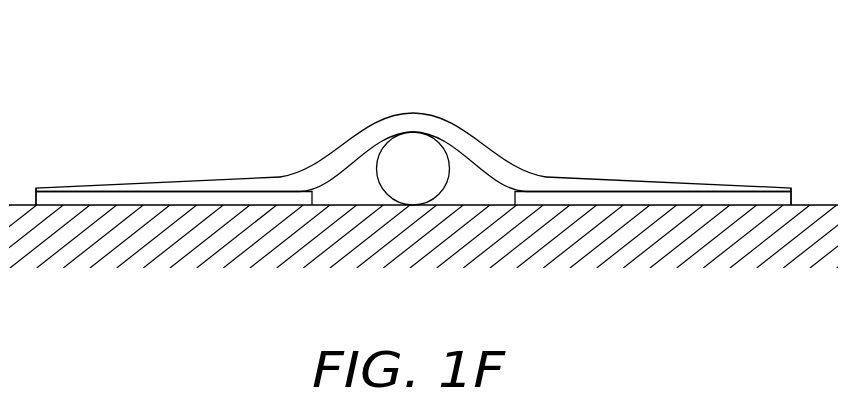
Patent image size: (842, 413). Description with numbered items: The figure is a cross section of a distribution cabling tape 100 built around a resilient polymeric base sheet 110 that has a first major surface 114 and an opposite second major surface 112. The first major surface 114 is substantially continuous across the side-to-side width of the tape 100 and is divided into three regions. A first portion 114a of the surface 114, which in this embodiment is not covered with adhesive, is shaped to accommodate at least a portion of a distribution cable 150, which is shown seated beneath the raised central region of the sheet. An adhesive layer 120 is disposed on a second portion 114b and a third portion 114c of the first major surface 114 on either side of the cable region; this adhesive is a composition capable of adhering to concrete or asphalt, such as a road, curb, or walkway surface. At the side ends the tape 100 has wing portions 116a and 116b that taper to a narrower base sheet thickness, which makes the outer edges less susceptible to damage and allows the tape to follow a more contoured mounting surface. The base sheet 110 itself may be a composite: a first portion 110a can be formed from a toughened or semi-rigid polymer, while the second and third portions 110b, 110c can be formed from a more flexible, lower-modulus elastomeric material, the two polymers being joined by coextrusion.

The distribution cabling tape 100 is at (419, 178).
The resilient polymeric base sheet 110 is at (413, 132).
The first portion of polymeric base sheet 110a is at (480, 143).
The second portion of polymeric base sheet 110b is at (202, 180).
The third portion of polymeric base sheet 110c is at (617, 180).
The second major surface 112 is at (136, 183).
The first major surface 114 is at (413, 190).
The first portion of the first major surface 114a is at (412, 132).
The second portion of the first major surface 114b is at (249, 190).
The third portion of the first major surface 114c is at (665, 191).
The wing portion 116a is at (64, 165).
The wing portion 116b is at (753, 167).
The adhesive layer 120 is at (207, 200).
The distribution cable 150 is at (428, 182).